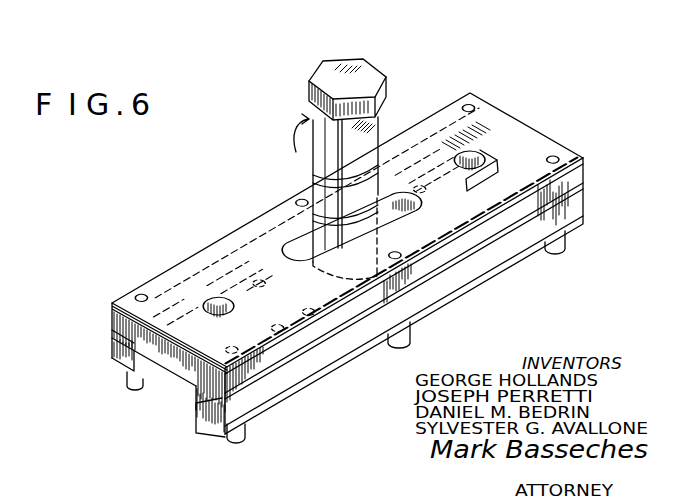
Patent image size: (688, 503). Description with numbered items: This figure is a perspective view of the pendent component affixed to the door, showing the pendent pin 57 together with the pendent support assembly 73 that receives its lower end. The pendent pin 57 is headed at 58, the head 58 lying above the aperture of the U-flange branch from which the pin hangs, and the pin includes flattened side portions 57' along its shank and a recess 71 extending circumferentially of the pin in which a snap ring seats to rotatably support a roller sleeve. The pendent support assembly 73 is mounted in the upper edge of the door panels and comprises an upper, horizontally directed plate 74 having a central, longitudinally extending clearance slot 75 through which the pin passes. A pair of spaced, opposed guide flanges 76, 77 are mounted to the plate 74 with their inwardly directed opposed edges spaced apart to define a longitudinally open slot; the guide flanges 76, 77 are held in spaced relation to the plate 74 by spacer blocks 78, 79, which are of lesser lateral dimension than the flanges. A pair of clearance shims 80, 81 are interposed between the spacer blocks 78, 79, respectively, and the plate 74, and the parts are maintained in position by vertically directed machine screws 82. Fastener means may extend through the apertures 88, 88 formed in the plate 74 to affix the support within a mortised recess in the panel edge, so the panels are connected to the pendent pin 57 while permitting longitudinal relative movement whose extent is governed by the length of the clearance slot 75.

The pendent pin 57 is at (331, 156).
The head 58 is at (366, 48).
The flattened side portions 57' is at (396, 93).
The recess 71 is at (377, 197).
The clearance slot 75 is at (260, 224).
The apertures 88 is at (213, 298).
The pendent support assembly 73 is at (533, 133).
The plate 74 is at (160, 281).
The clearance shim 81 is at (118, 331).
The spacer block 78 is at (111, 338).
The guide flange 76 is at (131, 374).
The guide flange 77 is at (203, 418).
The spacer block 79 is at (228, 399).
The clearance shim 80 is at (470, 250).
The machine screws 82 is at (401, 342).